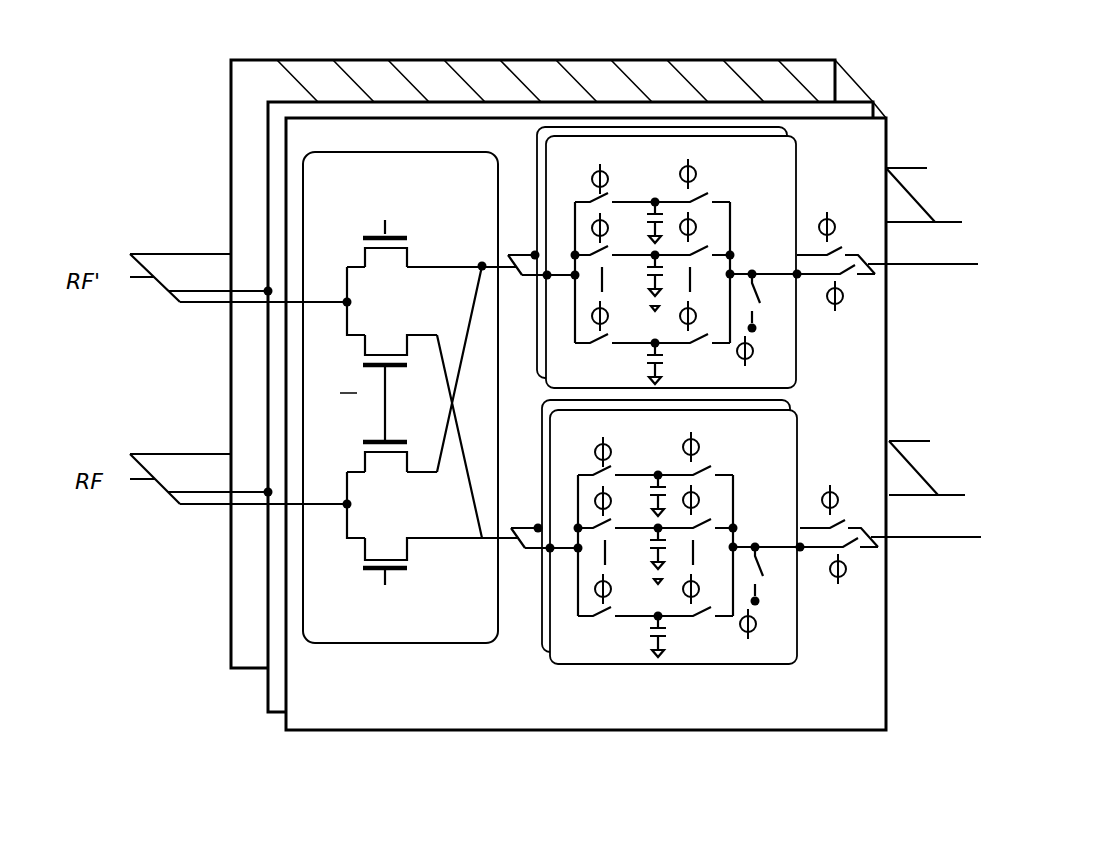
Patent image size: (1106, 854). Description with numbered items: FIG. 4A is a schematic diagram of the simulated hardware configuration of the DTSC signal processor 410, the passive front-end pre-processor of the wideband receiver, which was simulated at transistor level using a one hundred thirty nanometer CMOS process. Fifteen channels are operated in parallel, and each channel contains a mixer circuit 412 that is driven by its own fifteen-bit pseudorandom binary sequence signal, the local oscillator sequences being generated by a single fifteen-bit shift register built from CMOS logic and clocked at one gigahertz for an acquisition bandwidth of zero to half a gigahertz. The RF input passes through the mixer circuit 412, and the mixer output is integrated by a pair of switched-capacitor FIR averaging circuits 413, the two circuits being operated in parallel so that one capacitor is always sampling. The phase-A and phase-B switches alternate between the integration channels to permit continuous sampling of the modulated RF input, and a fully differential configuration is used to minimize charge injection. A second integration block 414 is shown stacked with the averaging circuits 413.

The DTSC signal processor 410 is at (540, 76).
The mixer circuit 412 is at (402, 152).
The switched-capacitor FIR averaging circuit 413 is at (790, 313).
The integration circuit stack 414 is at (747, 170).